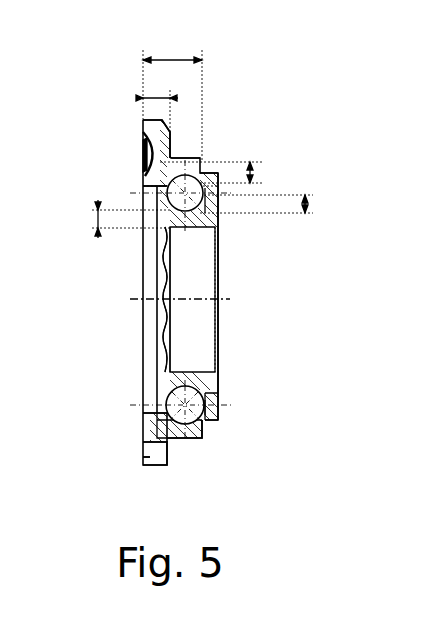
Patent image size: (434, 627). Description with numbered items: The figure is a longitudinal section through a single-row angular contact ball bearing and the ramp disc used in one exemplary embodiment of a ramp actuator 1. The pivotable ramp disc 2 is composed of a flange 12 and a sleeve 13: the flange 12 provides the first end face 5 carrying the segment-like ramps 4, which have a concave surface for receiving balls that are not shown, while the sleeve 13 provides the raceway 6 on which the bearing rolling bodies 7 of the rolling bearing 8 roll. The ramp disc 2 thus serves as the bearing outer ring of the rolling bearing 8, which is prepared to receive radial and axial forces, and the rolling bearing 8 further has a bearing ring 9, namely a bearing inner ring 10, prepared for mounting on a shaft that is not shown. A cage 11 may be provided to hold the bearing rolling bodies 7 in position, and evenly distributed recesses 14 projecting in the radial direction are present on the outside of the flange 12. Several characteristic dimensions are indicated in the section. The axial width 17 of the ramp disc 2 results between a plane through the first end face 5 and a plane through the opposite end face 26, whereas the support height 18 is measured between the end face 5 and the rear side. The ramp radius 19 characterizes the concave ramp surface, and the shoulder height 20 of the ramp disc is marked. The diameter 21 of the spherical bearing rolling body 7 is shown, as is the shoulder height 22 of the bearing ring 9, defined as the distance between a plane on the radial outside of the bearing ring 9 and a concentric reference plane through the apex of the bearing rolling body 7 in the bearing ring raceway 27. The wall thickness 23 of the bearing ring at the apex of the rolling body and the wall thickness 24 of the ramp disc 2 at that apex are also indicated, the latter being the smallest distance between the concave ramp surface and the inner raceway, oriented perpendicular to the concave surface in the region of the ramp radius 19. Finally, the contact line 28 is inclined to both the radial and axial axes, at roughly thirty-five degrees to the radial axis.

The ramp actuator 1 is at (70, 372).
The ramp disc 2 is at (150, 415).
The ramp 4 is at (144, 152).
The first end face 5 is at (143, 428).
The raceway 6 is at (143, 188).
The bearing rolling bodies 7 is at (216, 408).
The rolling bearing 8 is at (198, 360).
The bearing ring 9 is at (160, 378).
The bearing inner ring 10 is at (160, 378).
The cage 11 is at (216, 418).
The flange 12 is at (173, 440).
The sleeve 13 is at (203, 430).
The recesses 14 is at (143, 457).
The axial width 17 is at (175, 58).
The support height 18 is at (166, 98).
The ramp radius 19 is at (121, 160).
The shoulder height of the ramp disc 20 is at (252, 172).
The diameter of the spherical bearing rolling body 21 is at (212, 385).
The shoulder height of the bearing ring 22 is at (307, 204).
The wall thickness of the bearing ring 23 is at (94, 220).
The wall thickness of the ramp disc 24 is at (172, 154).
The opposite end face 26 is at (186, 168).
The bearing ring raceway 27 is at (200, 205).
The contact line 28 is at (203, 190).